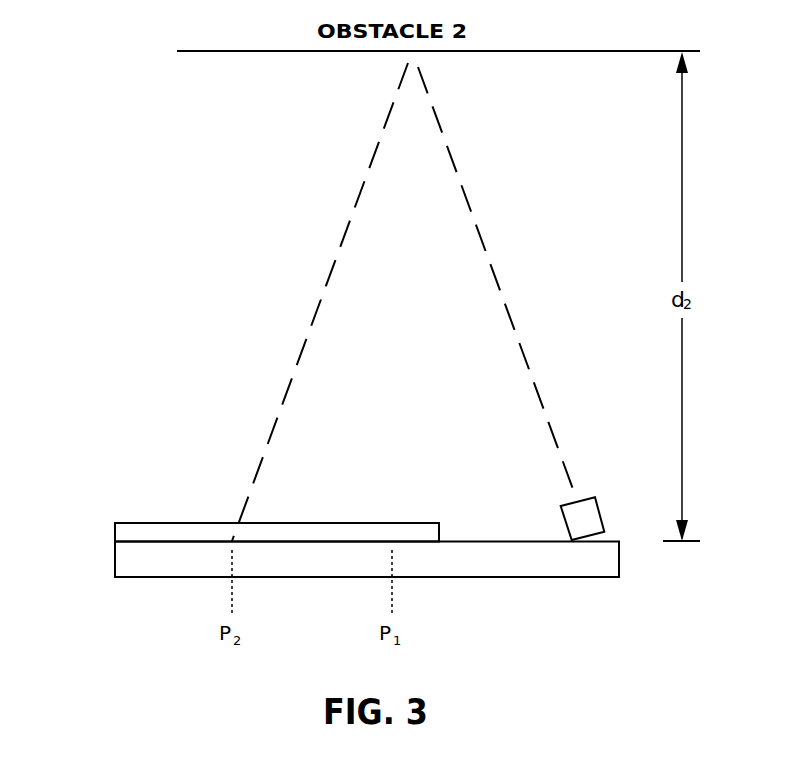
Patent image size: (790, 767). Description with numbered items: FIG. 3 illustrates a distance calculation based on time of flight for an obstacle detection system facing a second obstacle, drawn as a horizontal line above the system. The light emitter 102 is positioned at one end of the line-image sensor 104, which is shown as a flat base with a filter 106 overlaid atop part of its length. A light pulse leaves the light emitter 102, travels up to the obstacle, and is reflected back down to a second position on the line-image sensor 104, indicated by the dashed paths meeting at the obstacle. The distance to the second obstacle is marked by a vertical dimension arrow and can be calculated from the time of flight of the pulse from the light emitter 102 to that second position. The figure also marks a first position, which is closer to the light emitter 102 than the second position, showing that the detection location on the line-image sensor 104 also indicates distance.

The light emitter 102 is at (588, 497).
The line-image sensor 104 is at (115, 558).
The filter 106 is at (164, 523).